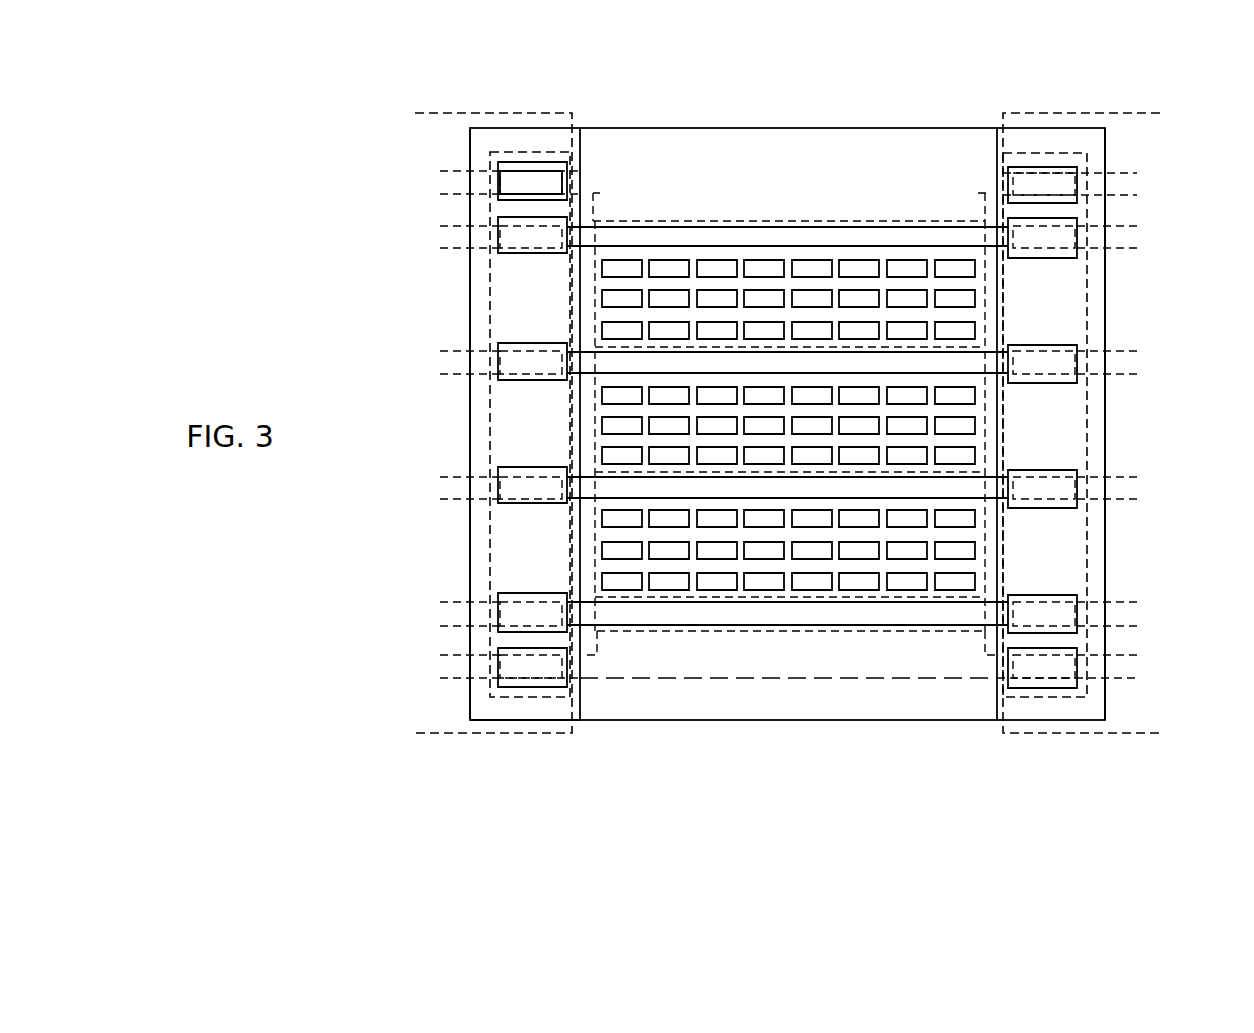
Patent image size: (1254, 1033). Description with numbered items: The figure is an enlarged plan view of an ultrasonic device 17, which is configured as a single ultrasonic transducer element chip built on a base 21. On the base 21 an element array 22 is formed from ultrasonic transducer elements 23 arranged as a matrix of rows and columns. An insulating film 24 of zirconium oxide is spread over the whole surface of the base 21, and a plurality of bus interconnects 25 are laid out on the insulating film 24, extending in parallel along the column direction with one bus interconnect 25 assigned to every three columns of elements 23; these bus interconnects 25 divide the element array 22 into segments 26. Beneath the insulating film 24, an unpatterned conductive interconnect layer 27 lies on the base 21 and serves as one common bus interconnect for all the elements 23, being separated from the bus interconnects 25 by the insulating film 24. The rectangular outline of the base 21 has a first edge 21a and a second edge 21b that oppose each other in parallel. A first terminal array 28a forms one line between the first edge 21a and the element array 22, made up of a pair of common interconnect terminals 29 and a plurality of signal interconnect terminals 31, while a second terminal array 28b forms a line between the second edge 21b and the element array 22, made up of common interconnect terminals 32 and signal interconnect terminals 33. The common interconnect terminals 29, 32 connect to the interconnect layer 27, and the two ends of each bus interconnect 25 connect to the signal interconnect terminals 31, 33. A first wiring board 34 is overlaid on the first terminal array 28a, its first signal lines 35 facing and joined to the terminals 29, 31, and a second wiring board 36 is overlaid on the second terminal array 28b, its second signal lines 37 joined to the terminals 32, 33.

The ultrasonic device 17 is at (892, 733).
The base 21 is at (556, 722).
The first edge 21a is at (470, 318).
The second edge 21b is at (1106, 421).
The element array 22 is at (657, 633).
The ultrasonic transducer element 23 is at (628, 251).
The insulating film 24 is at (581, 704).
The bus interconnect 25 is at (719, 240).
The segment 26 is at (598, 312).
The interconnect layer 27 is at (663, 682).
The first terminal array 28a is at (489, 440).
The second terminal array 28b is at (1088, 322).
The common interconnect terminal 29 is at (500, 170).
The signal interconnect terminal 31 is at (500, 250).
The common interconnect terminal 32 is at (1077, 168).
The signal interconnect terminal 33 is at (1077, 225).
The first wiring board 34 is at (443, 747).
The first signal line 35 is at (451, 203).
The second wiring board 36 is at (1036, 746).
The second signal line 37 is at (1045, 168).